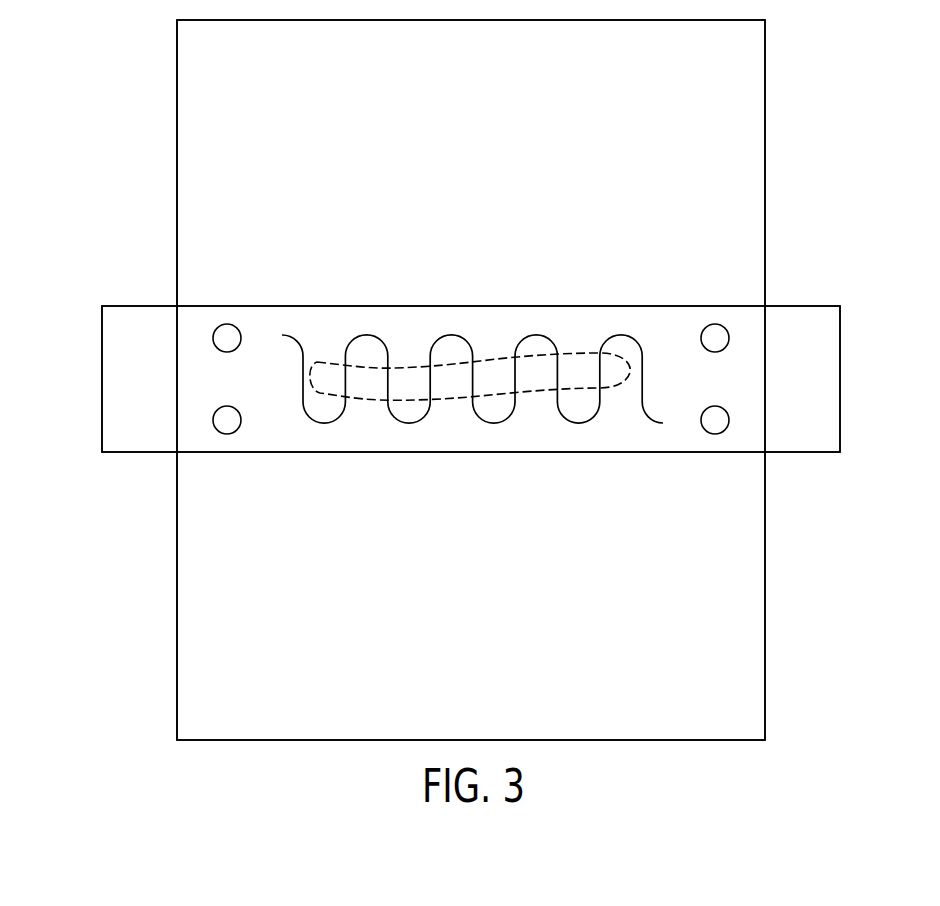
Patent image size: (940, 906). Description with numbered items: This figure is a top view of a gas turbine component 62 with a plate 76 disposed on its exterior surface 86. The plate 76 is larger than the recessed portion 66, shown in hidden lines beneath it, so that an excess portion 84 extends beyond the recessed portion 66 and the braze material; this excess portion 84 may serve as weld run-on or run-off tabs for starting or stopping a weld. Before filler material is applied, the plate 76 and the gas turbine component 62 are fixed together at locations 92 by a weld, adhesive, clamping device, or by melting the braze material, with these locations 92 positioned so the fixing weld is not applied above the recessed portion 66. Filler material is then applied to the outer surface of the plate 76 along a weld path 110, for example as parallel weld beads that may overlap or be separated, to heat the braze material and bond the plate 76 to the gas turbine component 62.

The gas turbine component 62 is at (742, 190).
The exterior surface 86 is at (742, 140).
The excess portion 84 is at (128, 370).
The plate 76 is at (825, 375).
The locations 92 is at (227, 338).
The weld path 110 is at (593, 415).
The recessed portion 66 is at (368, 388).